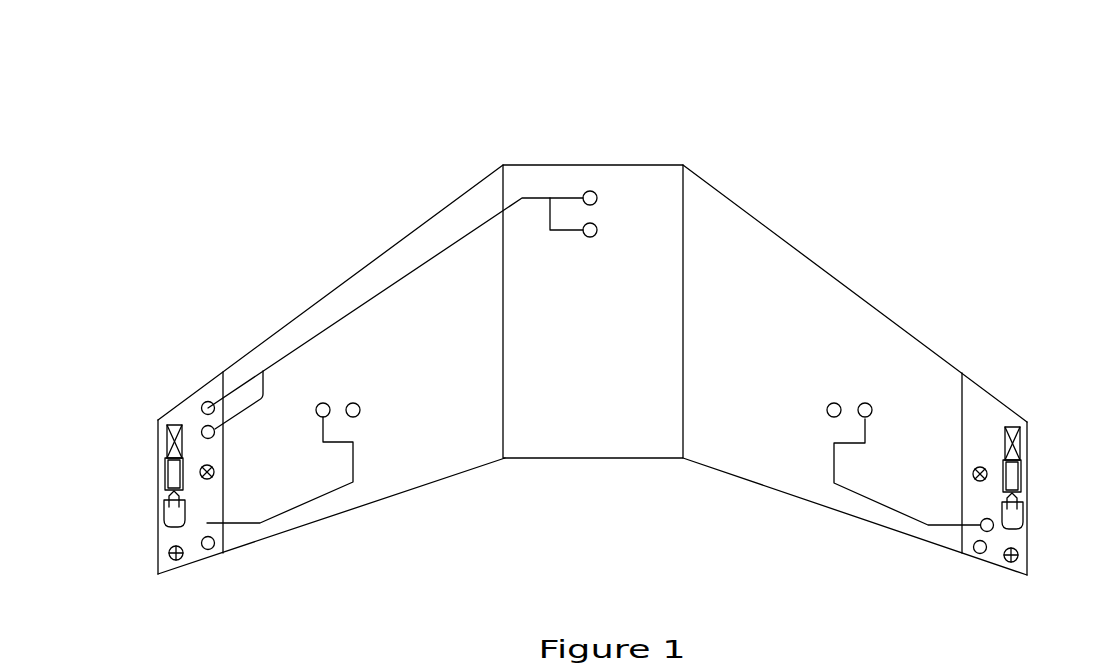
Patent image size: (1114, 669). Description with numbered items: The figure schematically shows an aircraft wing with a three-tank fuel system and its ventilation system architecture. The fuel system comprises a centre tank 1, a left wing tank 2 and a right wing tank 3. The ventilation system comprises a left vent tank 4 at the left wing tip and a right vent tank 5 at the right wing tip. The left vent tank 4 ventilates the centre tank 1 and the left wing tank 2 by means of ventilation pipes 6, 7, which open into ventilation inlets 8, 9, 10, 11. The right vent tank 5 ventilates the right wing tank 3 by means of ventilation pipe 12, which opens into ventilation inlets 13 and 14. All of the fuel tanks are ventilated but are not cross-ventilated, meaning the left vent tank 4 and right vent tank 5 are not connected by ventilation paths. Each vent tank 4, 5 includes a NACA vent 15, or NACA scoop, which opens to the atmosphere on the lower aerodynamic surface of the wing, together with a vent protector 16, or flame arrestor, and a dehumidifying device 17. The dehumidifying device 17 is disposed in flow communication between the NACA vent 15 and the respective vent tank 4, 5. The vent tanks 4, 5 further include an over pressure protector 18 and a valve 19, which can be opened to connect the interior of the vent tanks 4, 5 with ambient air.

The centre tank 1 is at (591, 410).
The left wing tank 2 is at (407, 480).
The right wing tank 3 is at (782, 458).
The left vent tank 4 is at (193, 553).
The right vent tank 5 is at (995, 552).
The ventilation pipe 6 is at (315, 497).
The ventilation pipe 7 is at (361, 305).
The ventilation inlet 8 is at (207, 550).
The ventilation inlet 9 is at (324, 417).
The ventilation inlet 10 is at (209, 425).
The ventilation inlet 11 is at (592, 223).
The ventilation pipe 12 is at (872, 497).
The ventilation inlet 13 is at (982, 530).
The ventilation inlet 14 is at (834, 403).
The NACA vent 15 is at (170, 516).
The vent protector 16 is at (170, 481).
The dehumidifying device 17 is at (167, 438).
The over pressure protector 18 is at (203, 466).
The valve 19 is at (168, 553).